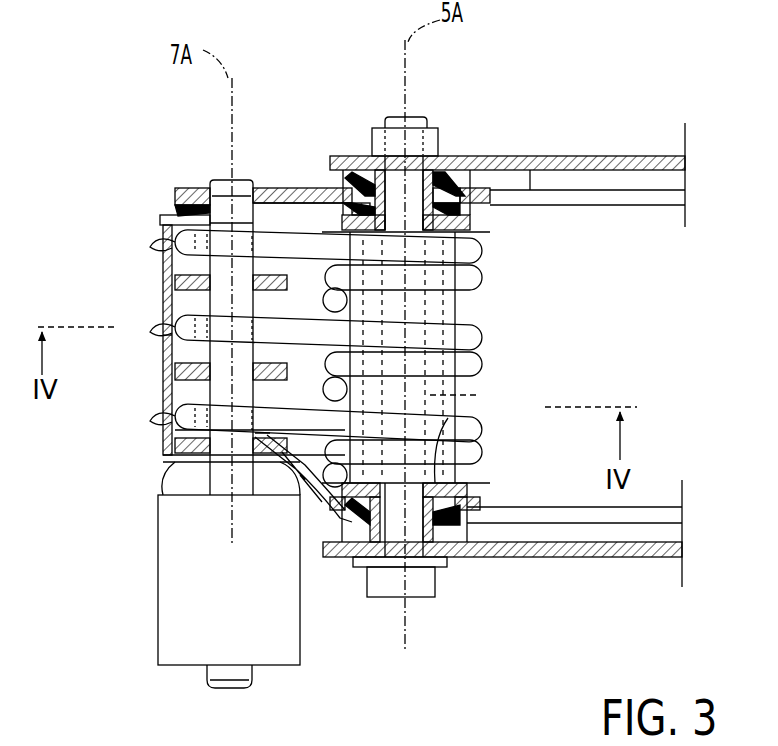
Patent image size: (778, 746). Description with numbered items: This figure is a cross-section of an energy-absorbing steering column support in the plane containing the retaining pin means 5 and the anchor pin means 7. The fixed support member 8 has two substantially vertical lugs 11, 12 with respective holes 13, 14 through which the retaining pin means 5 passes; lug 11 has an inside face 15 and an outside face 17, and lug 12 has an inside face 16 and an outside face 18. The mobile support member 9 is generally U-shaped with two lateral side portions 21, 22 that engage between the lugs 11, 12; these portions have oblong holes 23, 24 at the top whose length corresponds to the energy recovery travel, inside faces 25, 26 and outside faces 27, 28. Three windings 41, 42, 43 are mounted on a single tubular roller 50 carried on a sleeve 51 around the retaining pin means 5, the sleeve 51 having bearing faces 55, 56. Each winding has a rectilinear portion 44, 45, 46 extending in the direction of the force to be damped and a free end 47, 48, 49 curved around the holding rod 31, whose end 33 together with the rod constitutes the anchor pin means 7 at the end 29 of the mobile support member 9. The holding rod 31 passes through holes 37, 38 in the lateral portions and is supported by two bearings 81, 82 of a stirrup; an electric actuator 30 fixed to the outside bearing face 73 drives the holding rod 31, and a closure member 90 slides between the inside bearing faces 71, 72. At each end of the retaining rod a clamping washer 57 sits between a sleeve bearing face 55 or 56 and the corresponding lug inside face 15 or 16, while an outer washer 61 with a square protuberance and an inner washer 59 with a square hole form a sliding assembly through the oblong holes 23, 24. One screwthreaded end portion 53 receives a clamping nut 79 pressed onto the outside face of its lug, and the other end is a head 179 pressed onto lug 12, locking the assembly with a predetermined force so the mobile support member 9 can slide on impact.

The retaining pin means 5 is at (383, 120).
The anchor pin means 7 is at (232, 178).
The fixed support member 8 is at (655, 155).
The mobile support member 9 is at (660, 210).
The lug 11 is at (560, 155).
The lug 12 is at (596, 557).
The hole 13 is at (440, 172).
The hole 14 is at (435, 567).
The inside face 15 is at (670, 178).
The inside face 16 is at (665, 542).
The outside face 17 is at (615, 155).
The outside face 18 is at (638, 557).
The lateral side portion 21 is at (283, 188).
The lateral side portion 22 is at (300, 530).
The oblong hole 23 is at (685, 200).
The oblong hole 24 is at (660, 512).
The inside face 25 is at (605, 207).
The inside face 26 is at (550, 507).
The outside face 27 is at (530, 170).
The outside face 28 is at (568, 523).
The end 29 is at (183, 186).
The electric actuator 30 is at (190, 585).
The holding rod 31 is at (225, 200).
The end 33 is at (240, 200).
The hole 37 is at (180, 202).
The hole 38 is at (165, 458).
The winding 41 is at (478, 282).
The winding 42 is at (482, 357).
The winding 43 is at (478, 455).
The rectilinear portion 44 is at (312, 230).
The rectilinear portion 45 is at (318, 324).
The rectilinear portion 46 is at (312, 417).
The free end 47 is at (160, 240).
The free end 48 is at (160, 322).
The free end 49 is at (160, 414).
The tubular roller 50 is at (455, 305).
The sleeve 51 is at (478, 395).
The screwthreaded end portion 53 is at (395, 117).
The bearing face 55 is at (478, 245).
The bearing face 56 is at (478, 425).
The clamping washer 57 is at (478, 205).
The inner washer 59 is at (360, 203).
The outer washer 61 is at (362, 200).
The inside bearing face 71 is at (163, 230).
The inside bearing face 72 is at (175, 445).
The outside bearing face 73 is at (170, 478).
The clamping nut 79 is at (415, 128).
The bearing 81 is at (175, 282).
The bearing 82 is at (175, 371).
The closure member 90 is at (160, 335).
The head 179 is at (415, 582).